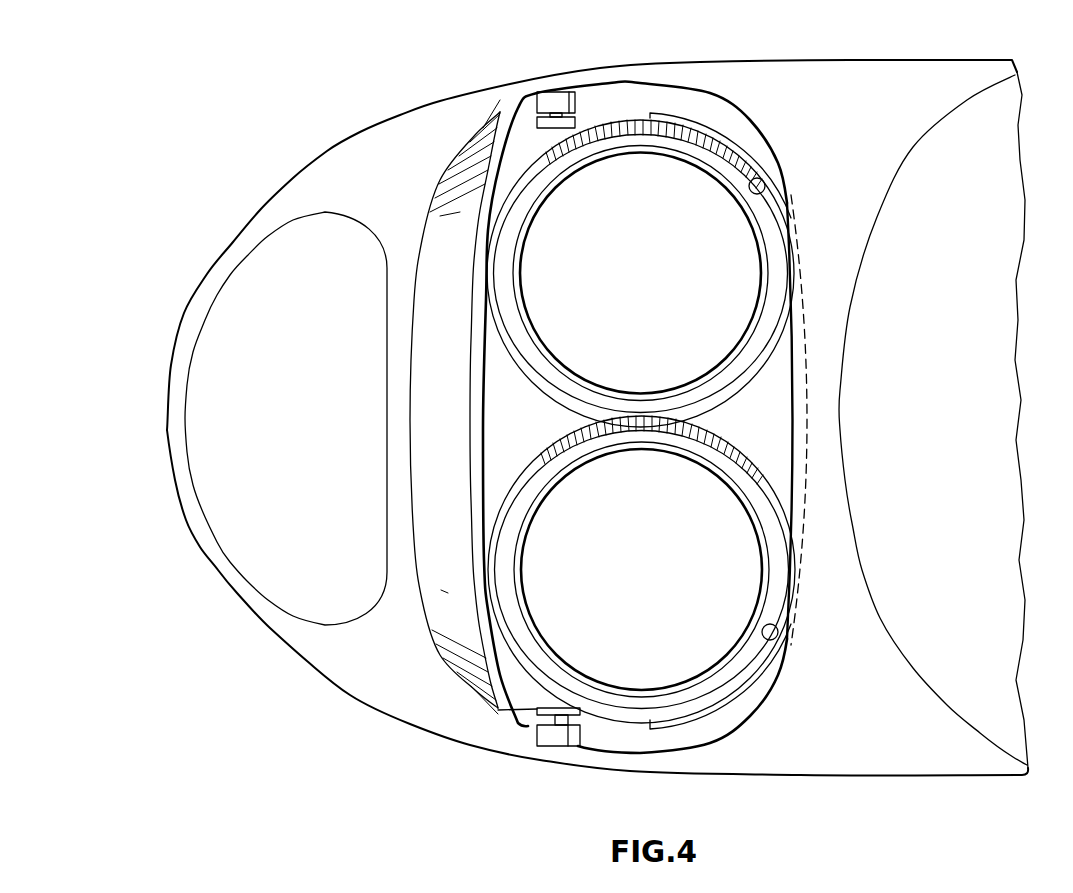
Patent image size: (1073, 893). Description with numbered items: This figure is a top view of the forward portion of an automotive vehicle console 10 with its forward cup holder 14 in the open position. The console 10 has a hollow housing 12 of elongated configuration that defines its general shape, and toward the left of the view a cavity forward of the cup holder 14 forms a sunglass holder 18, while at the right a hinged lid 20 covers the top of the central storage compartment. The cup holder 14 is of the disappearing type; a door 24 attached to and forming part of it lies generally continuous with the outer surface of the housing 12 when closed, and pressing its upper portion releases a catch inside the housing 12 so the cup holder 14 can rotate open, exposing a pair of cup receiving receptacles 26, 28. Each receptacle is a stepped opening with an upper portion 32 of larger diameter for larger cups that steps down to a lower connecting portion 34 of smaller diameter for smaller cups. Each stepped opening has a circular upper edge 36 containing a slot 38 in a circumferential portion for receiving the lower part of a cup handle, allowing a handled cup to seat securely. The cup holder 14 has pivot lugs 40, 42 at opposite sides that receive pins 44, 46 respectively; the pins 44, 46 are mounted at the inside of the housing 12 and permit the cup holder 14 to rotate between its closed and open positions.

The automotive vehicle console 10 is at (793, 789).
The hollow housing 12 is at (363, 703).
The forward cup holder 14 is at (689, 112).
The sunglass holder 18 is at (253, 287).
The hinged lid 20 is at (988, 345).
The door 24 is at (447, 203).
The cup receiving receptacle 26 is at (645, 290).
The cup receiving receptacle 28 is at (645, 584).
The upper portion 32 is at (765, 191).
The lower connecting portion 34 is at (577, 161).
The upper edge 36 is at (724, 133).
The slot 38 is at (630, 116).
The pivot lug 40 is at (532, 120).
The pivot lug 42 is at (503, 712).
The pin 44 is at (557, 103).
The pin 46 is at (553, 731).